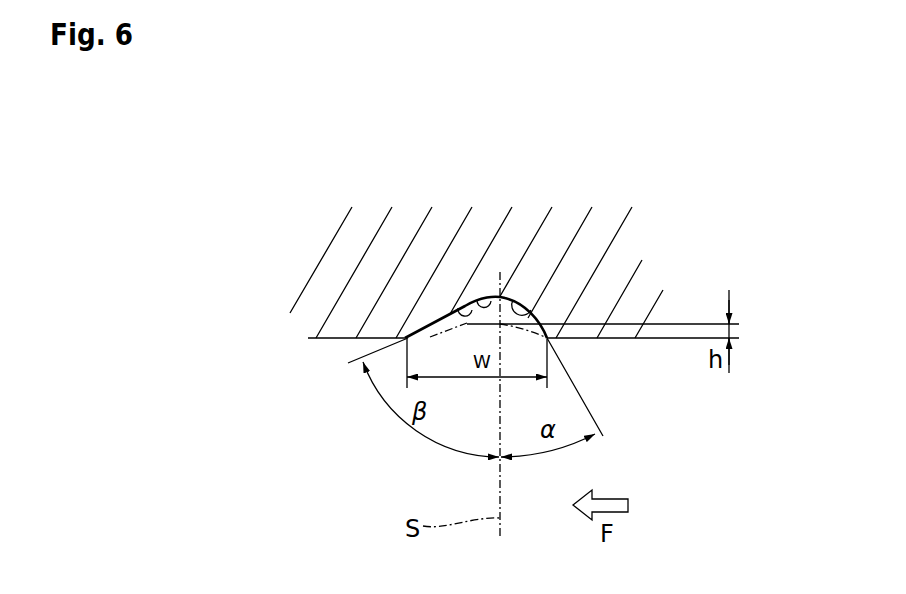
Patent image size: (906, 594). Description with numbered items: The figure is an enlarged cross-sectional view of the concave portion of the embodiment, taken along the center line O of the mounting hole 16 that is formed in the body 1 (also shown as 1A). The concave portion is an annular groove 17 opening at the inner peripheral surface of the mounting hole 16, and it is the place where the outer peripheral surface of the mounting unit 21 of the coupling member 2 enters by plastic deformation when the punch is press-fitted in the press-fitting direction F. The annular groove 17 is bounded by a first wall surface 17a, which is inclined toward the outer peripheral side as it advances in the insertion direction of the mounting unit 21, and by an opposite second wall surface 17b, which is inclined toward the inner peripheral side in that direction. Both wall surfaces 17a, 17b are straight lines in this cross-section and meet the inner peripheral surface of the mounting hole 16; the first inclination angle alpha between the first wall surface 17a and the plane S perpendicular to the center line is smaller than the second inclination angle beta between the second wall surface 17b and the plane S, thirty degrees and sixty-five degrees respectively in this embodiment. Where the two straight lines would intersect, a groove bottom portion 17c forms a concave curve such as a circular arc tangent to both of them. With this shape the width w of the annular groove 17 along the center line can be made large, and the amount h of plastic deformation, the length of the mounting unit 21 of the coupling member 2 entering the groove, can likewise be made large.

The workpiece body 1 is at (476, 254).
The workpiece body 1A is at (538, 197).
The mounting hole 16 is at (388, 330).
The annular groove 17 is at (472, 337).
The first wall surface 17a is at (513, 300).
The second wall surface 17b is at (450, 315).
The groove bottom portion 17c is at (475, 307).
The coupling member 2 is at (509, 387).
The mounting unit 21 is at (670, 402).